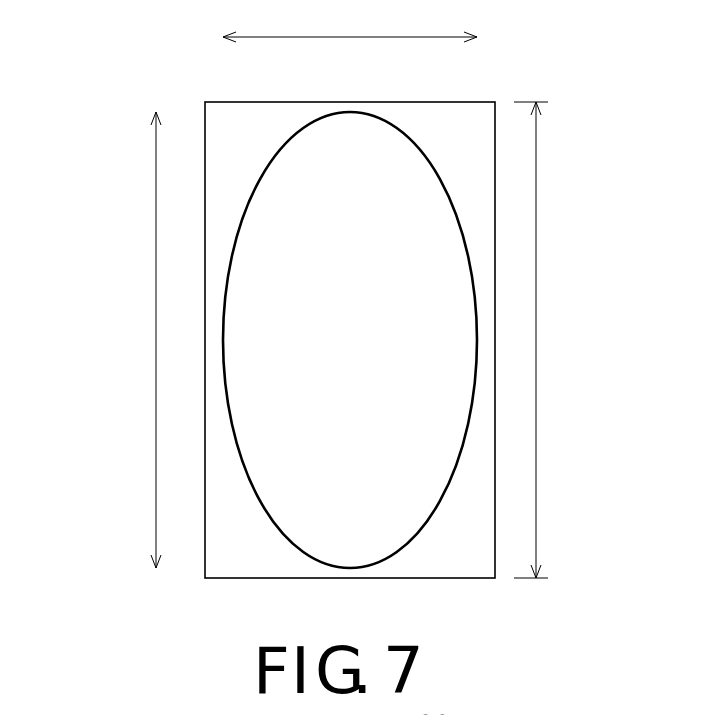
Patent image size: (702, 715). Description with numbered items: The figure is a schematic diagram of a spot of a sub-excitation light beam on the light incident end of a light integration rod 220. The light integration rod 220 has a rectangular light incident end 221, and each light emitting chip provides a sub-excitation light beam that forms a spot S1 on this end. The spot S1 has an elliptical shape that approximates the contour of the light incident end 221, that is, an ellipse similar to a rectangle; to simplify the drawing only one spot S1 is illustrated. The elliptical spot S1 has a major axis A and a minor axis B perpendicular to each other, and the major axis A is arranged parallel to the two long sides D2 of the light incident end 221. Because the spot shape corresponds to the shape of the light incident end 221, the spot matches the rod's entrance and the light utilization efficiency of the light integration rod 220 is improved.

The light integration rod 220 is at (296, 289).
The light incident end 221 is at (486, 102).
The spot S1 is at (422, 147).
The major axis A is at (143, 340).
The minor axis B is at (350, 21).
The long sides D2 is at (550, 340).